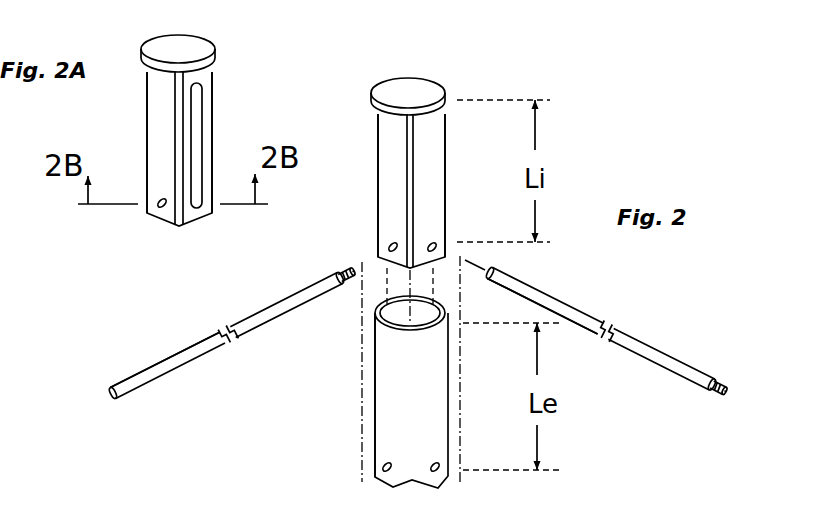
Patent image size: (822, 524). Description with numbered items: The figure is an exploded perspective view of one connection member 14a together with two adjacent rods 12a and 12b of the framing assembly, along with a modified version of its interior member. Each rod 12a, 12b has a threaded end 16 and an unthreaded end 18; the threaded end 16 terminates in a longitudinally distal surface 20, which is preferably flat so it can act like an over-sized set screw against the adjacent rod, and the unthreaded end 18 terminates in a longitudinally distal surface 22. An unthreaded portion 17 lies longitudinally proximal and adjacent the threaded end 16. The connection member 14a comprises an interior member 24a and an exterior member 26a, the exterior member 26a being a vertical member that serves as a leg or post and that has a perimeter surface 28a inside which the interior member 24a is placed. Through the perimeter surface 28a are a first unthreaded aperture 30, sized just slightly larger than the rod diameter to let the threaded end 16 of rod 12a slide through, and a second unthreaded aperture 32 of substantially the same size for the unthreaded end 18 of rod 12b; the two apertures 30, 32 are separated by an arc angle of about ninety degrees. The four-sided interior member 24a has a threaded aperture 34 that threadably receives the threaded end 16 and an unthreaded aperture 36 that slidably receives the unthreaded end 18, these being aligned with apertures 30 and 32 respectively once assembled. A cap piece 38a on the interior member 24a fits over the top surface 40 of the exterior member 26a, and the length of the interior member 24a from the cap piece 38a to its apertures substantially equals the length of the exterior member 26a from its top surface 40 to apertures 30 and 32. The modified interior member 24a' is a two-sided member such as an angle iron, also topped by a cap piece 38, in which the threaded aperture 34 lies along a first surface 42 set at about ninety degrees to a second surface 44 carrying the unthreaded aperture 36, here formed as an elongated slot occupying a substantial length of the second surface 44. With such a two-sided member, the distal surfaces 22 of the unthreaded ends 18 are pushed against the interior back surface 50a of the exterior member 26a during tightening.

In FIG. 2, the rod 12a is at (297, 297).
In FIG. 2, the rod 12b is at (563, 298).
In FIG. 2, the connection member 14a is at (325, 122).
In FIG. 2, the threaded end 16 is at (345, 270).
In FIG. 2, the unthreaded portion 17 is at (336, 277).
In FIG. 2, the unthreaded end 18 is at (117, 384).
In FIG. 2, the longitudinally distal surface 20 is at (352, 279).
In FIG. 2, the longitudinally distal surface 22 is at (108, 397).
In FIG. 2, the interior member 24a is at (450, 191).
In FIG. 2A, the modified interior member 24a' is at (223, 135).
In FIG. 2, the exterior member 26a is at (467, 376).
In FIG. 2, the perimeter surface 28a is at (388, 393).
In FIG. 2, the first unthreaded aperture 30 is at (386, 464).
In FIG. 2, the second unthreaded aperture 32 is at (440, 465).
In FIG. 2A, the threaded aperture 34 is at (160, 208).
In FIG. 2, the threaded aperture 34 is at (393, 242).
In FIG. 2A, the unthreaded aperture 36 is at (205, 152).
In FIG. 2, the unthreaded aperture 36 is at (435, 243).
In FIG. 2A, the cap piece 38 is at (190, 47).
In FIG. 2, the cap piece 38a is at (433, 90).
In FIG. 2, the top surface 40 is at (447, 314).
In FIG. 2A, the first surface 42 is at (155, 148).
In FIG. 2, the first surface 42 is at (388, 175).
In FIG. 2A, the second surface 44 is at (190, 214).
In FIG. 2, the second surface 44 is at (425, 185).
In FIG. 2, the interior back surface 50a is at (395, 312).